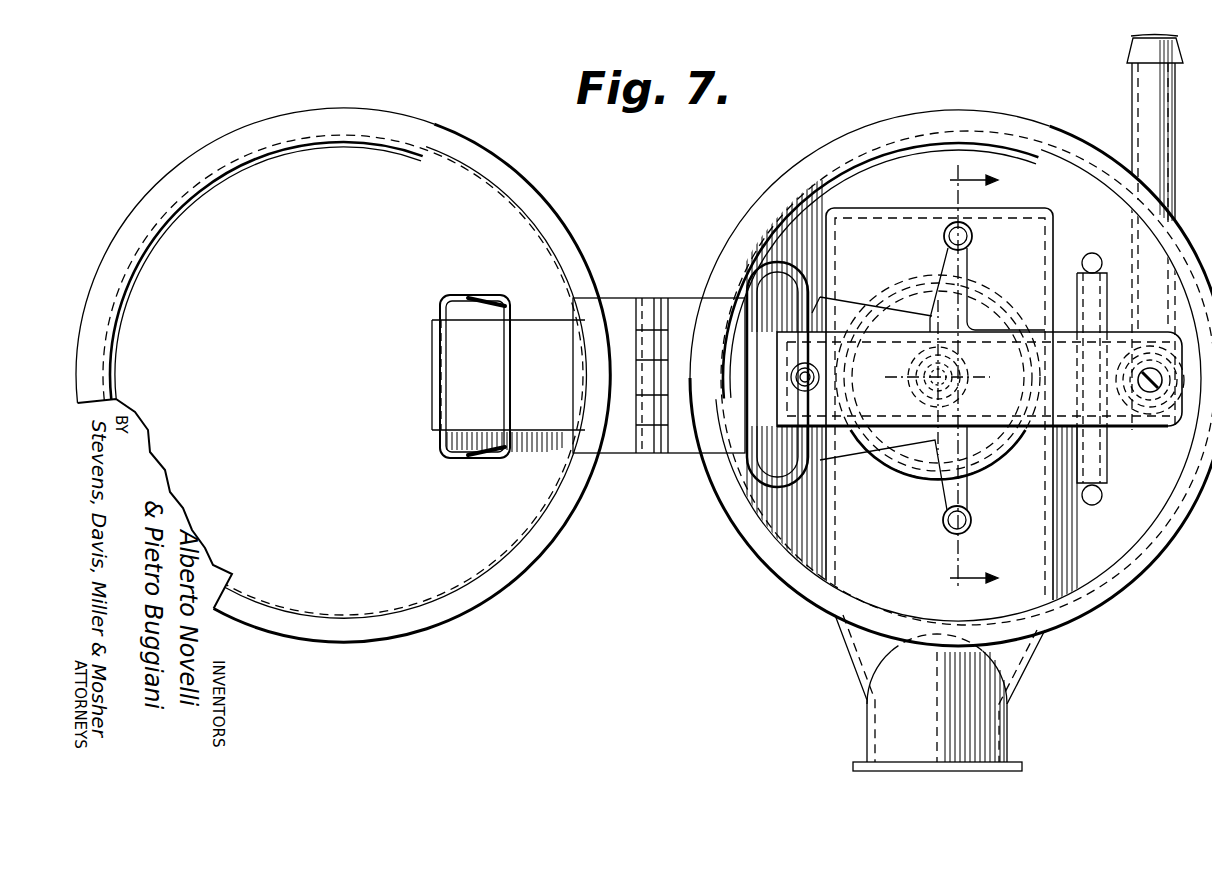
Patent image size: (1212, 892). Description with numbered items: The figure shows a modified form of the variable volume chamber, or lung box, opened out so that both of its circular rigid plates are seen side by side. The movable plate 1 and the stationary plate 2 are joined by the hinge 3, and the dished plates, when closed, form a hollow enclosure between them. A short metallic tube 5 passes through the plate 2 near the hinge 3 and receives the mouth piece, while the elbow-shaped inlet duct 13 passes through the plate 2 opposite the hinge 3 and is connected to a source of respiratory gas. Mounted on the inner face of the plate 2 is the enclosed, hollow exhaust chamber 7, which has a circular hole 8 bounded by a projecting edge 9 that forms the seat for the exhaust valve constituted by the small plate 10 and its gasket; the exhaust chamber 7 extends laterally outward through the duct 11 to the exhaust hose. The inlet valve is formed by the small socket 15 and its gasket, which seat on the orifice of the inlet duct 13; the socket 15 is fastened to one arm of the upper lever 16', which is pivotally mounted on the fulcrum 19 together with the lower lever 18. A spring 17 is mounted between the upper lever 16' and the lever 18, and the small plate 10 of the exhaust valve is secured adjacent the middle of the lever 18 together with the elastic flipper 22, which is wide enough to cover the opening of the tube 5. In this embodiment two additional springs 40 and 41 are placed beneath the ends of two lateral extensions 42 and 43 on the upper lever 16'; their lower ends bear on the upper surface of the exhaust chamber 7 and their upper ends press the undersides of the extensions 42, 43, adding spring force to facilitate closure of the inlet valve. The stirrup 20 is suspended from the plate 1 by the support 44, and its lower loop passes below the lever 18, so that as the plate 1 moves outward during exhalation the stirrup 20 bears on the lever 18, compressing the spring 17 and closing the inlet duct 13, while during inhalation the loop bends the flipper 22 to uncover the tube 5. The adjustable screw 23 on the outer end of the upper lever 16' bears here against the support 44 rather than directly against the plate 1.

The plate 1 is at (346, 108).
The plate 2 is at (932, 116).
The hinge 3 is at (648, 298).
The connection or tube 5 is at (742, 270).
The exhaust chamber 7 is at (1003, 226).
The circular hole 8 is at (858, 374).
The projecting edge 9 is at (963, 387).
The small plate 10 is at (890, 290).
The duct 11 is at (886, 729).
The inlet duct 13 is at (1130, 90).
The socket 15 is at (1142, 428).
The upper lever 16' is at (1150, 415).
The spring 17 is at (968, 384).
The lever 18 is at (1008, 440).
The fulcrum 19 is at (1097, 257).
The stirrup 20 is at (504, 383).
The flipper 22 is at (772, 468).
The adjustable screw 23 is at (822, 380).
The spring 40 is at (944, 238).
The spring 41 is at (943, 525).
The lateral extension 42 is at (968, 264).
The lateral extension 43 is at (968, 492).
The support 44 is at (527, 452).